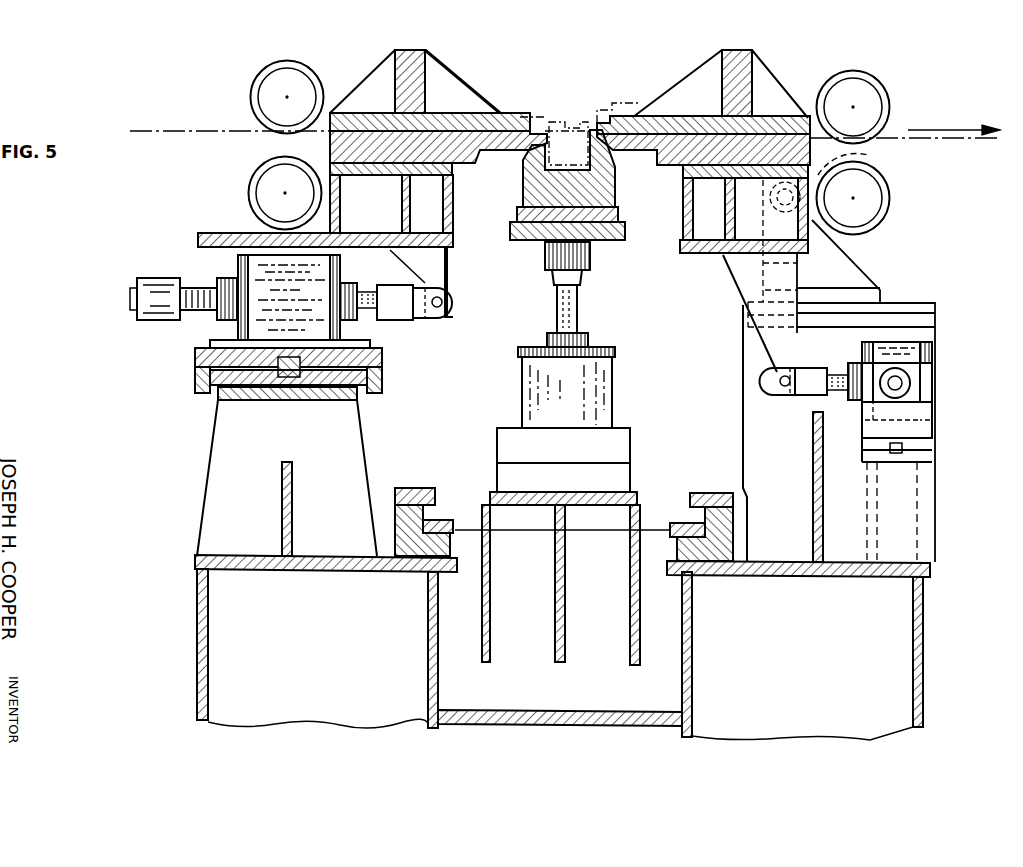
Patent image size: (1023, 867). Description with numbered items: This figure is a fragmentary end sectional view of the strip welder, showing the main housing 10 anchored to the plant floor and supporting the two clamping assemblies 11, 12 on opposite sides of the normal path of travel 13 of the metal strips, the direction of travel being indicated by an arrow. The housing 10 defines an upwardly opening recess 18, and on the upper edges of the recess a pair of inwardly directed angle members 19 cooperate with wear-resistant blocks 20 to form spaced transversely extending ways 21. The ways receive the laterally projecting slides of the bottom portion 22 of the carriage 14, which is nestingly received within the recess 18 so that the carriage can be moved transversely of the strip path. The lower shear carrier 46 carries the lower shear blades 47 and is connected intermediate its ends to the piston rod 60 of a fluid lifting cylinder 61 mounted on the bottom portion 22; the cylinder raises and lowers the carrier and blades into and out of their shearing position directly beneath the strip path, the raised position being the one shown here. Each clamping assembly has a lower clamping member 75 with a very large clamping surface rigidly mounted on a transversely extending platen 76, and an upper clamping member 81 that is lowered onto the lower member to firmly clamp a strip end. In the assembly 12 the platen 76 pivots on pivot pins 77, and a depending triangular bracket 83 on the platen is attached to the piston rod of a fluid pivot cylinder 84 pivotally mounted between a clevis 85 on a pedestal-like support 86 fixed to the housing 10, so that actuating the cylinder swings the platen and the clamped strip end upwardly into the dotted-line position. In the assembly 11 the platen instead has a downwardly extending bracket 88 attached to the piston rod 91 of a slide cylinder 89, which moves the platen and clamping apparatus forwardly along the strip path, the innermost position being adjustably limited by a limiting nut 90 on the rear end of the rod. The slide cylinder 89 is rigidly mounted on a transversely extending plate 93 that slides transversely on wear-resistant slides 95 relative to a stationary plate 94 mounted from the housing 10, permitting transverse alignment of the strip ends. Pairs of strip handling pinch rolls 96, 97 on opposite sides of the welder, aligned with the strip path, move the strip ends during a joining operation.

The main housing 10 is at (175, 624).
The clamping assembly 11 is at (377, 53).
The clamping assembly 12 is at (803, 78).
The normal path of travel 13 is at (151, 131).
The carriage 14 is at (522, 642).
The recess 18 is at (660, 684).
The angle members 19 is at (396, 520).
The wear-resistant blocks 20 is at (419, 488).
The ways 21 is at (428, 521).
The bottom portion 22 is at (644, 492).
The lower shear carrier 46 is at (617, 202).
The shear blades 47 is at (548, 132).
The piston rod 60 is at (557, 305).
The fluid lifting cylinder 61 is at (520, 383).
The lower clamping member 75 is at (458, 146).
The platen 76 is at (453, 220).
The pivot pins 77 is at (820, 236).
The upper clamping member 81 is at (428, 54).
The bracket 83 is at (740, 286).
The fluid pivot cylinder 84 is at (932, 352).
The clevis 85 is at (920, 388).
The pedestal-like support 86 is at (921, 430).
The bracket 88 is at (441, 263).
The slide cylinder 89 is at (240, 276).
The limiting nut 90 is at (152, 314).
The piston rod 91 is at (197, 310).
The plate 93 is at (197, 387).
The stationary plate 94 is at (360, 400).
The wear-resistant slides 95 is at (383, 352).
The pinch rolls 96 is at (259, 76).
The pinch rolls 97 is at (881, 194).